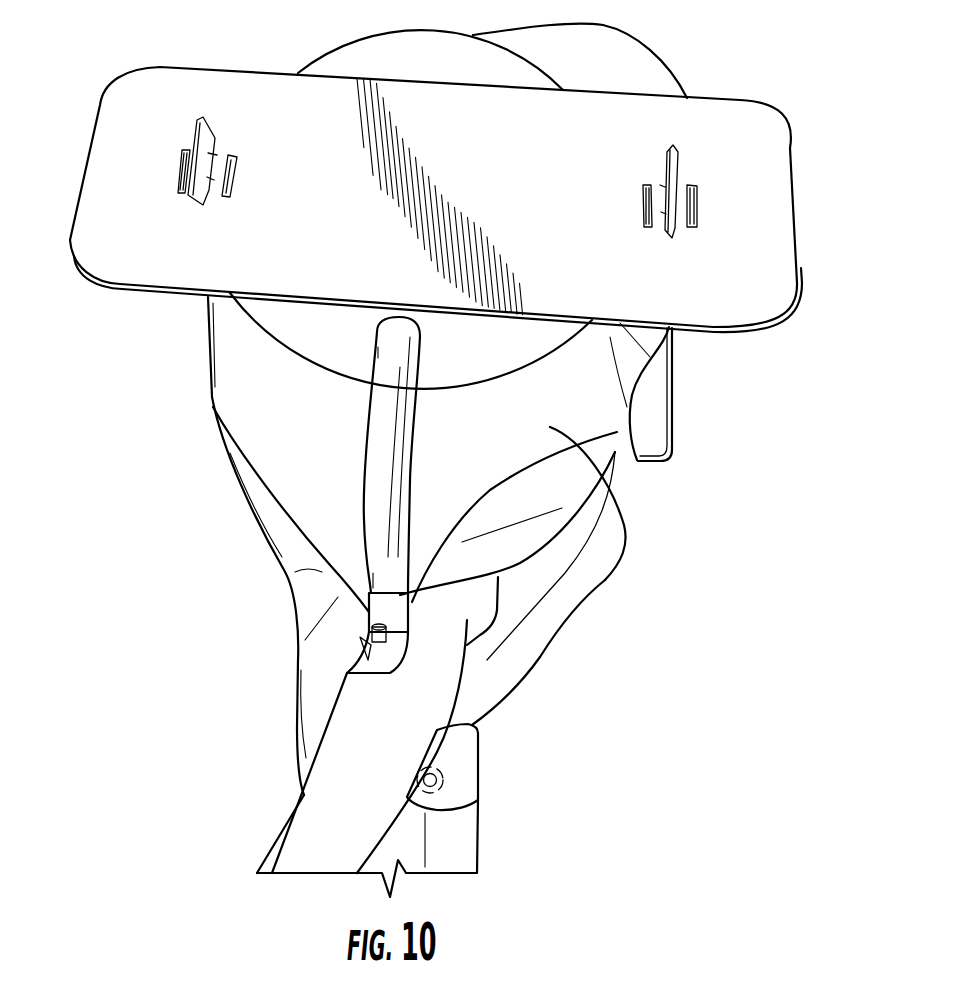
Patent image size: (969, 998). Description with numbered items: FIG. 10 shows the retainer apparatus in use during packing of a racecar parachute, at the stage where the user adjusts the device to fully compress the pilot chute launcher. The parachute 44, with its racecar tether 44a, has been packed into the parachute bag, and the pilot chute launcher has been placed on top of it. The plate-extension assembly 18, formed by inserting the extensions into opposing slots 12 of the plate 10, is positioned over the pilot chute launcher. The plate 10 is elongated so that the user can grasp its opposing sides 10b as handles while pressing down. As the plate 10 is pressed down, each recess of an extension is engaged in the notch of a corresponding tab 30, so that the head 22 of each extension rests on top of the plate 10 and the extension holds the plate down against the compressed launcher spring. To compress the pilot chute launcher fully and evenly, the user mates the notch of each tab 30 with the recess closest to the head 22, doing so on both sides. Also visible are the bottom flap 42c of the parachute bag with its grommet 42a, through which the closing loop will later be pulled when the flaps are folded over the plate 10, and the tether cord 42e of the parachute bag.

The plate 10 is at (677, 503).
The second side 10b is at (833, 287).
The slot 12 is at (810, 127).
The plate-extension assembly 18 is at (50, 370).
The head 22 is at (663, 174).
The tab 30 is at (753, 463).
The grommet 42a is at (492, 779).
The bottom flap of parachute bag 42c is at (670, 663).
The tether cord 42e is at (382, 531).
The parachute 44 is at (660, 573).
The racecar tether 44a is at (327, 800).